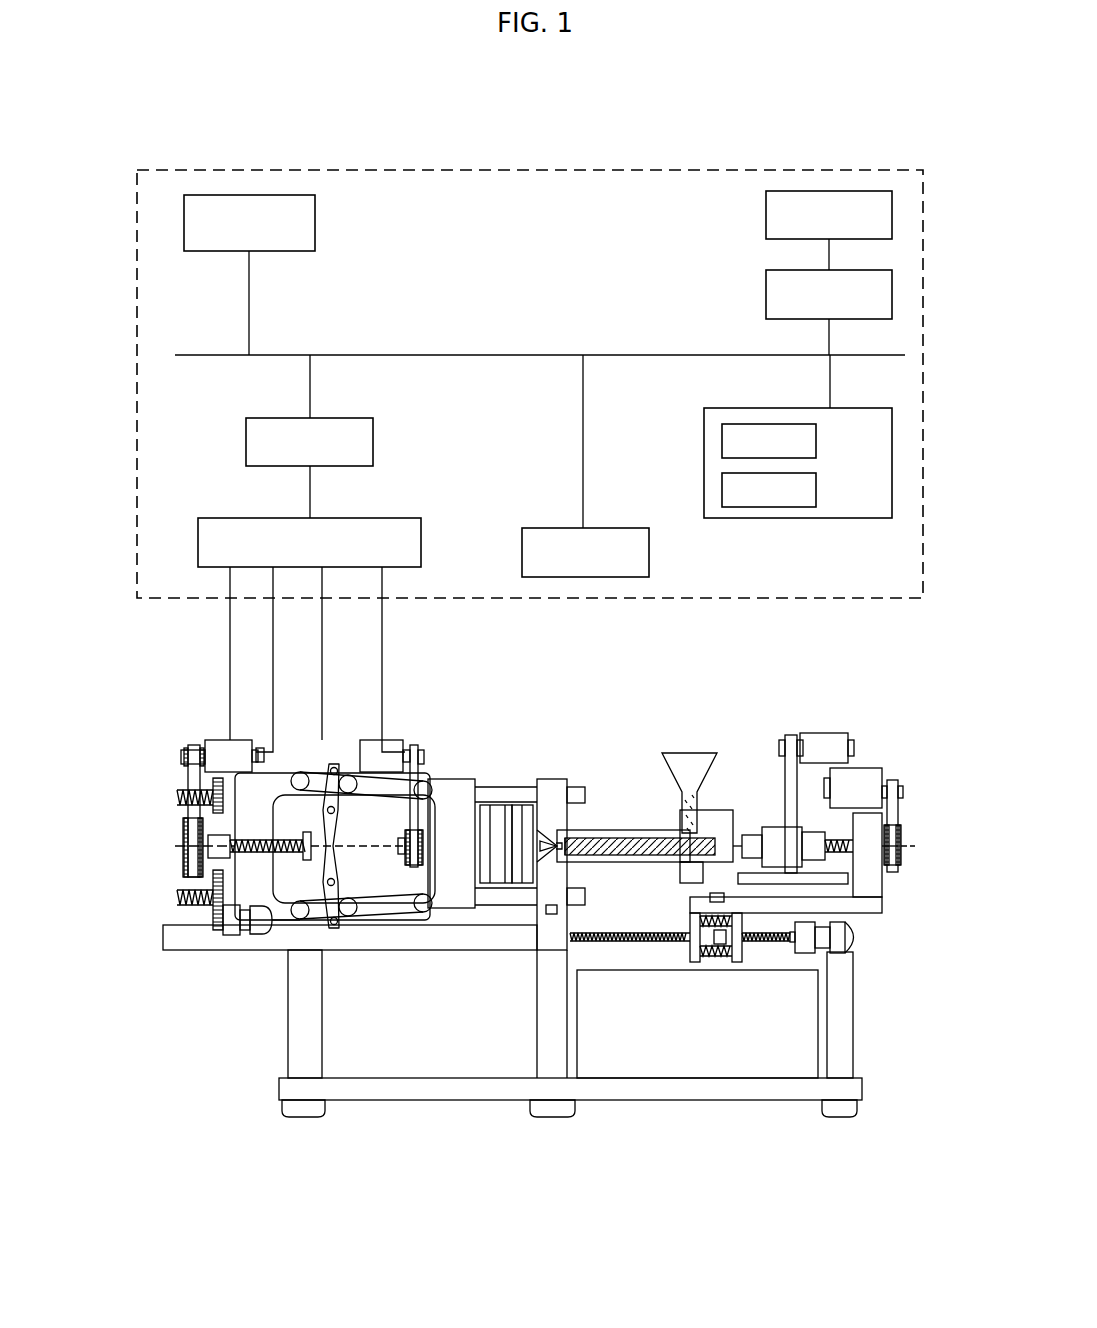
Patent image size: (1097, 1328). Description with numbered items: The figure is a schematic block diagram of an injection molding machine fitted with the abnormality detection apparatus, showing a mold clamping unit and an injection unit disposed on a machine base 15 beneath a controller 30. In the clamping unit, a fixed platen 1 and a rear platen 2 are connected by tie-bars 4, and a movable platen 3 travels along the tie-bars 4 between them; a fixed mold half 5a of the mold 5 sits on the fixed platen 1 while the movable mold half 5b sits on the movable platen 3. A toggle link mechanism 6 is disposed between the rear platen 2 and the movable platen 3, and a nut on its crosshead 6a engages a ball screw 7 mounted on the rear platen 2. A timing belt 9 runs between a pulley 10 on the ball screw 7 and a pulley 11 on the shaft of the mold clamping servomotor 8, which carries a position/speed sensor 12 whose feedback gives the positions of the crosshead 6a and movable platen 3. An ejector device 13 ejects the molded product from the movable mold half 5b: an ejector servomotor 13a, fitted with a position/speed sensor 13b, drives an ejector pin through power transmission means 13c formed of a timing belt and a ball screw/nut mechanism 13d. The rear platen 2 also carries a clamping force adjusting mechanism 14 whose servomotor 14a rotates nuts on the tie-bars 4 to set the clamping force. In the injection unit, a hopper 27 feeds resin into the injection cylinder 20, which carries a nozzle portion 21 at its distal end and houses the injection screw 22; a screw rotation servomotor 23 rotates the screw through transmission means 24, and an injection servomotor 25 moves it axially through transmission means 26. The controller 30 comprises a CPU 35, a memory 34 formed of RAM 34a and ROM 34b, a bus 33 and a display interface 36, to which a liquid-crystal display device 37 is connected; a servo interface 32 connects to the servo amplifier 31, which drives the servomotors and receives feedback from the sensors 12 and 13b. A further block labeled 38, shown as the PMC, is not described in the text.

The fixed platen 1 is at (557, 779).
The rear platen 2 is at (275, 773).
The movable platen 3 is at (448, 779).
The tie-bars 4 is at (512, 928).
The mold 5 is at (497, 792).
The fixed mold half 5a is at (513, 814).
The movable mold half 5b is at (494, 805).
The toggle link mechanism 6 is at (342, 834).
The crosshead 6a is at (305, 860).
The ball screw 7 is at (290, 845).
The mold clamping servomotor 8 is at (225, 740).
The timing belt 9 is at (188, 778).
The pulley 10 is at (184, 862).
The pulley 11 is at (186, 750).
The position/speed sensor 12 is at (258, 748).
The ejector device 13 is at (408, 785).
The ejector servomotor 13a is at (394, 745).
The position/speed sensor 13b is at (372, 740).
The power transmission means 13c is at (405, 834).
The ball screw/nut mechanism 13d is at (404, 858).
The clamping force adjusting mechanism 14 is at (180, 908).
The clamping force adjusting servomotor 14a is at (245, 932).
The machine base 15 is at (418, 1100).
The injection cylinder 20 is at (668, 832).
The nozzle portion 21 is at (558, 840).
The injection screw 22 is at (640, 860).
The screw rotation servomotor 23 is at (815, 733).
The transmission means 24 is at (784, 772).
The injection servomotor 25 is at (865, 768).
The transmission means 26 is at (902, 802).
The hopper 27 is at (686, 762).
The controller 30 is at (500, 170).
The servo amplifier 31 is at (421, 544).
The servo interface 32 is at (373, 442).
The bus 33 is at (520, 355).
The memory 34 is at (769, 456).
The RAM 34a is at (722, 436).
The ROM 34b is at (722, 488).
The processor (CPU) 35 is at (315, 222).
The display interface 36 is at (766, 292).
The liquid-crystal display device 37 is at (766, 222).
The PMC (programmable machine controller) 38 is at (649, 558).